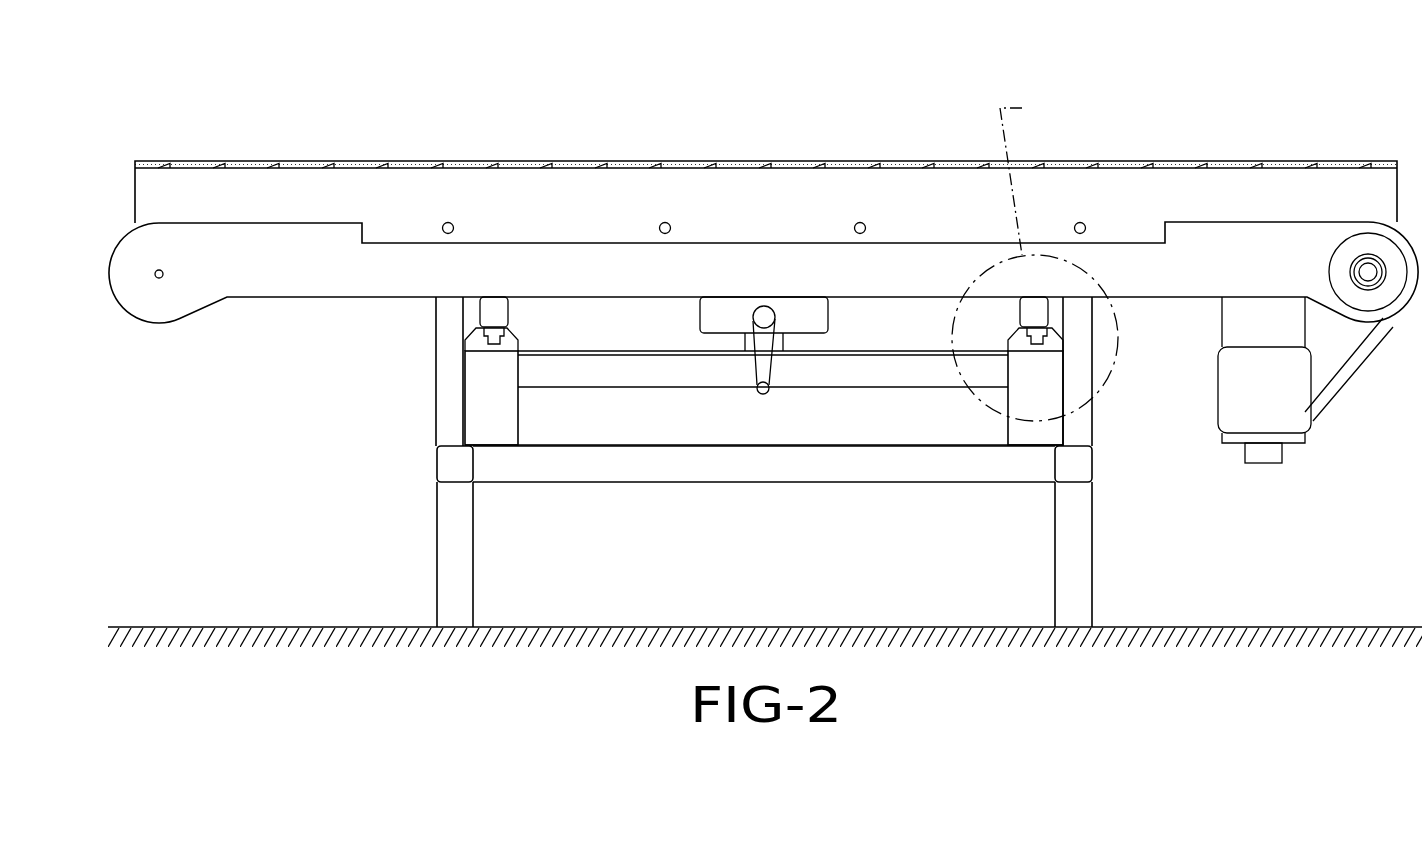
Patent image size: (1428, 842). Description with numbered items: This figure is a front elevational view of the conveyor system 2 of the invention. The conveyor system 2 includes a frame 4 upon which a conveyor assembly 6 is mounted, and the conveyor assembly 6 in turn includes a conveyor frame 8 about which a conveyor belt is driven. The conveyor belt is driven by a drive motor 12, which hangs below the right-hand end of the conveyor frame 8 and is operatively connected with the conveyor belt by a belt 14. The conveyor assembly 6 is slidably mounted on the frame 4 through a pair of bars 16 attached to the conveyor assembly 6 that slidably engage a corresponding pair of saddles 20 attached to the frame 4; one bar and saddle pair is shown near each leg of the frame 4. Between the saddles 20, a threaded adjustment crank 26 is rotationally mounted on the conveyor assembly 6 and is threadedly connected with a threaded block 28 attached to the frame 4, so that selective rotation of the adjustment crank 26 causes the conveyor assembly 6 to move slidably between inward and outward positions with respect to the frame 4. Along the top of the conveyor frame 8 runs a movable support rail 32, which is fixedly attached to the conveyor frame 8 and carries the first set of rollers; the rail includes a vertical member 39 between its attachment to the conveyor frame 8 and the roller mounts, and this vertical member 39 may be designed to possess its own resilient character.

The conveyor system 2 is at (648, 84).
The frame 4 is at (428, 538).
The conveyor assembly 6 is at (620, 148).
The conveyor frame 8 is at (308, 298).
The drive motor 12 is at (1238, 388).
The belt 14 is at (1343, 373).
The bars 16 is at (493, 327).
The saddles 20 is at (480, 338).
The threaded adjustment crank 26 is at (767, 366).
The threaded block 28 is at (745, 338).
The movable support rail 32 is at (410, 168).
The vertical member 39 is at (464, 192).